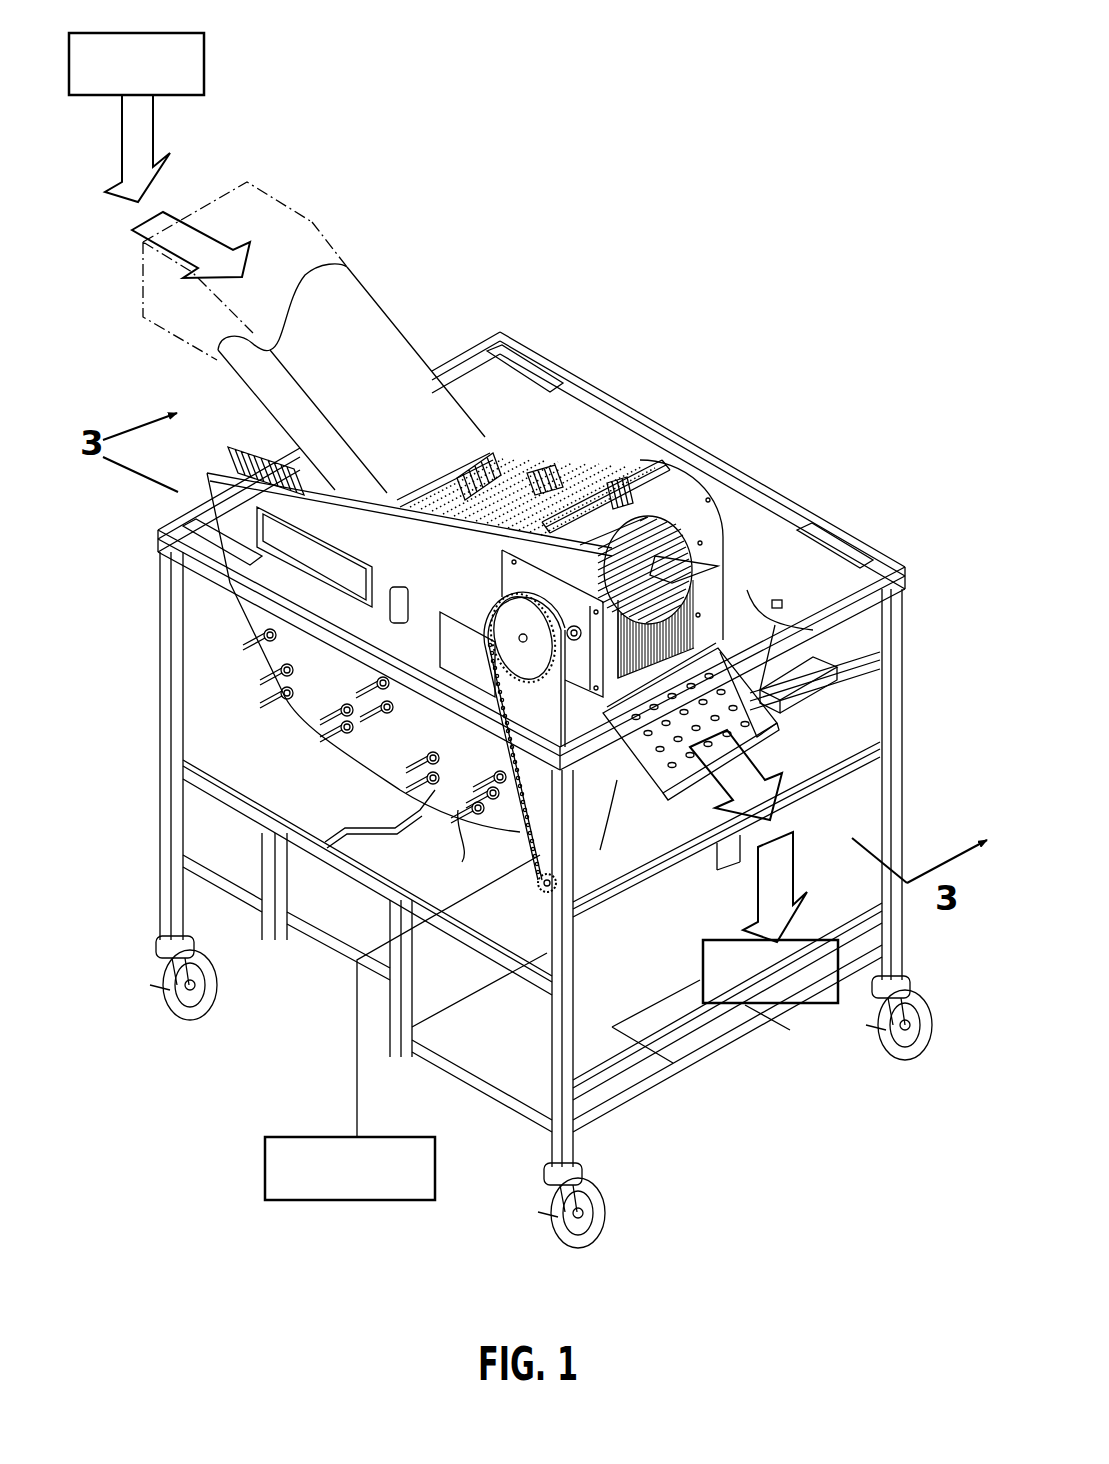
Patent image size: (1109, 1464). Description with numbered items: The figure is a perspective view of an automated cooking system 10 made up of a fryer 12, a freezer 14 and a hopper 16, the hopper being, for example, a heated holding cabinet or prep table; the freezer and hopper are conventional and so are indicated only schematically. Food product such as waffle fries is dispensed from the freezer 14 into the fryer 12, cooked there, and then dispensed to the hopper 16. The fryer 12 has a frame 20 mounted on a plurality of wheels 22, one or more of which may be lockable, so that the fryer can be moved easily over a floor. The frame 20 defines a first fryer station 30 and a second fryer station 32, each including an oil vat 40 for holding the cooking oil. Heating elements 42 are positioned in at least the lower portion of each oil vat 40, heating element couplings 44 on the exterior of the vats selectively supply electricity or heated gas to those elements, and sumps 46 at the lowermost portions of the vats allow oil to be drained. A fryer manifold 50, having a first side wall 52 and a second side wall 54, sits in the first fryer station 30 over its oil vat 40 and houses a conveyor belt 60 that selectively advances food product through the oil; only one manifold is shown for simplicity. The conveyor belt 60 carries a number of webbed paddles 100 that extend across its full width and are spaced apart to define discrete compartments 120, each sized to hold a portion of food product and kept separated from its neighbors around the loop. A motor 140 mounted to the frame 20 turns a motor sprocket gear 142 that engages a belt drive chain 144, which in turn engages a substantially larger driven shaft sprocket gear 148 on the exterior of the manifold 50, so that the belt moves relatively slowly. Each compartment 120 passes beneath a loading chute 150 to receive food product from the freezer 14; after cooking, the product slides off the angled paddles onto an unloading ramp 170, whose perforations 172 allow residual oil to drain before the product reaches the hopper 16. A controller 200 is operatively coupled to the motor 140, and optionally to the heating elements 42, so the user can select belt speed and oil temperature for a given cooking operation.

The system 10 is at (668, 248).
The fryer 12 is at (659, 414).
The freezer 14 is at (205, 57).
The hopper 16 is at (775, 1004).
The frame 20 is at (906, 703).
The wheels 22 is at (212, 993).
The first fryer station 30 is at (205, 506).
The second fryer station 32 is at (468, 396).
The oil vat 40 is at (245, 617).
The heating elements 42 is at (778, 604).
The heating element couplings 44 is at (280, 693).
The sumps 46 is at (443, 808).
The fryer manifold 50 is at (722, 536).
The first side wall 52 is at (200, 532).
The second side wall 54 is at (697, 513).
The conveyor belt 60 is at (712, 586).
The paddles 100 is at (503, 477).
The compartments 120 is at (583, 487).
The motor 140 is at (614, 775).
The motor sprocket gear 142 is at (541, 884).
The belt drive chain 144 is at (488, 672).
The driven shaft sprocket gear 148 is at (518, 600).
The loading chute 150 is at (372, 298).
The unloading ramp 170 is at (717, 734).
The perforations 172 is at (675, 743).
The controller 200 is at (437, 1162).